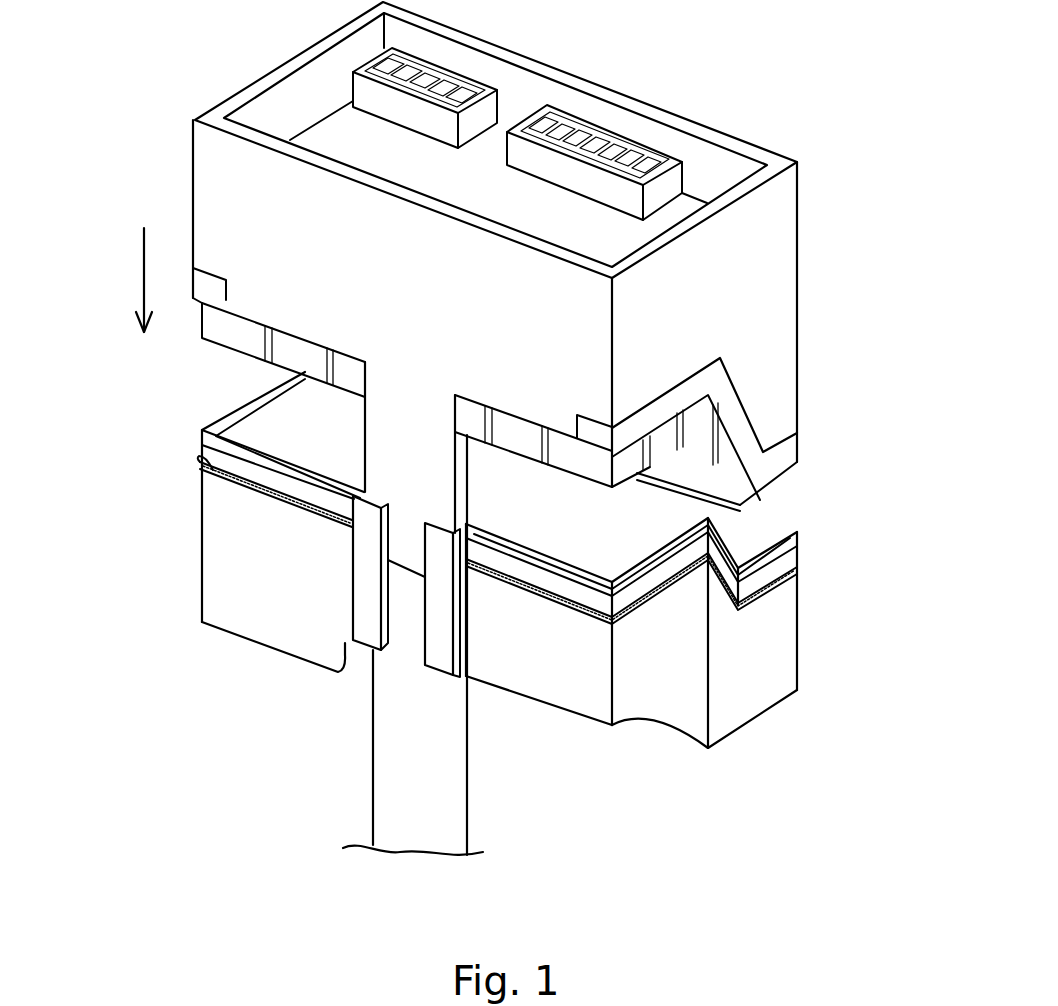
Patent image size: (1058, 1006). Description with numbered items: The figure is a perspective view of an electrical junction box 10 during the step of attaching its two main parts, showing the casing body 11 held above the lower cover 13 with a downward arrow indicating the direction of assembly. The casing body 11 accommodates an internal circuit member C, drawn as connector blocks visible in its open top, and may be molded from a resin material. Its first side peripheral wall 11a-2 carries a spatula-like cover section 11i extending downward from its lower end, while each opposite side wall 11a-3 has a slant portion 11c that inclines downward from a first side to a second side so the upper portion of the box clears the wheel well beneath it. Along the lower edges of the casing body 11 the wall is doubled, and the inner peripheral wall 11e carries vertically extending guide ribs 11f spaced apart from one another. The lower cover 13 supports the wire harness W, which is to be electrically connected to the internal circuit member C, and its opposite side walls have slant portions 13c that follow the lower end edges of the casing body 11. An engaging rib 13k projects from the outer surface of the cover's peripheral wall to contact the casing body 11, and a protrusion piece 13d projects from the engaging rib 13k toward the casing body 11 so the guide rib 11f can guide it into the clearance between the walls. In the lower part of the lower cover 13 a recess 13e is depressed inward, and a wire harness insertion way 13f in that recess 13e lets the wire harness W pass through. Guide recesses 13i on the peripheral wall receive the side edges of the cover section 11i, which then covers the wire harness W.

The electrical junction box 10 is at (860, 798).
The casing body 11 is at (800, 190).
The first side peripheral wall 11a-2 is at (213, 168).
The opposite side wall 11a-3 is at (770, 277).
The slant portion 11c is at (752, 436).
The inner peripheral wall 11e is at (203, 322).
The guide rib 11f is at (738, 486).
The cover section 11i is at (203, 476).
The lower cover 13 is at (202, 575).
The slant portion 13c is at (757, 522).
The protrusion piece 13d is at (712, 550).
The recess 13e is at (580, 717).
The wire harness insertion way 13f is at (477, 682).
The guide recess 13i is at (440, 606).
The engaging rib 13k is at (775, 588).
The internal circuit member C is at (618, 138).
The wire harness W is at (403, 768).